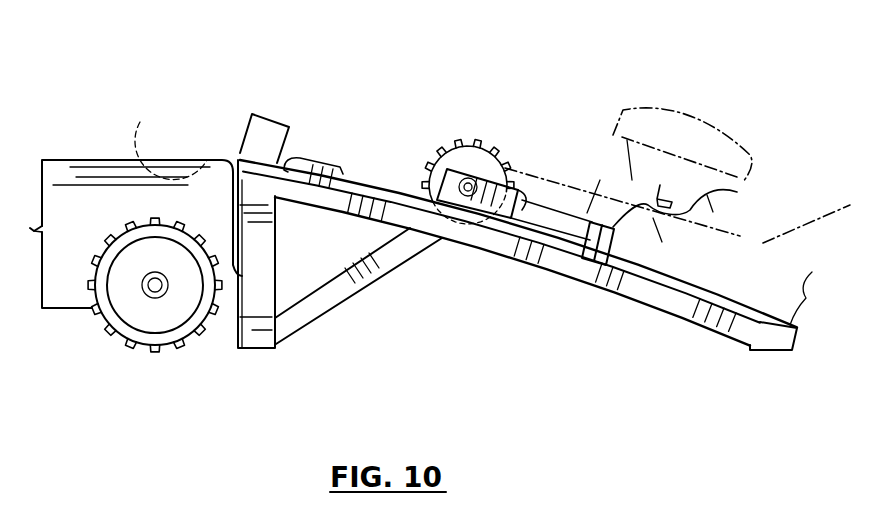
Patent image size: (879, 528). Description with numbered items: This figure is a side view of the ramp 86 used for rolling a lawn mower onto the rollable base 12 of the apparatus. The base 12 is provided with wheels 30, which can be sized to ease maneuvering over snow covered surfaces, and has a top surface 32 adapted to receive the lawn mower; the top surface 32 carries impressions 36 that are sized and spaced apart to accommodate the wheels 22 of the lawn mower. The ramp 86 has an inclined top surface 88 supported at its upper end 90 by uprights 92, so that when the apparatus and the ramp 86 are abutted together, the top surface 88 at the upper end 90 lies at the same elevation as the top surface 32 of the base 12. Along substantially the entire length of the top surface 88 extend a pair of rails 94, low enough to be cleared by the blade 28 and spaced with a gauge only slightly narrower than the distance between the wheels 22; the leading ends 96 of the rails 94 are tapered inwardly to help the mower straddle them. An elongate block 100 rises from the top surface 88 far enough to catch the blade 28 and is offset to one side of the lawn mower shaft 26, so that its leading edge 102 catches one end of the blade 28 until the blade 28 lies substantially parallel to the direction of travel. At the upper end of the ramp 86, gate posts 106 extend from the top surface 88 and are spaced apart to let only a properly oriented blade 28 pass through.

The base 12 is at (68, 300).
The wheels of lawn mower 22 is at (508, 152).
The lawn mower shaft 26 is at (737, 192).
The lawn mower blade 28 is at (710, 237).
The wheels 30 is at (172, 335).
The top surface 32 is at (78, 160).
The impressions 36 is at (136, 135).
The ramp 86 is at (418, 108).
The inclined top surface 88 is at (356, 181).
The upper end 90 is at (243, 158).
The uprights 92 is at (268, 306).
The rails 94 is at (707, 297).
The leading ends 96 is at (768, 330).
The elongate block 100 is at (553, 196).
The leading edge 102 is at (662, 180).
The gate posts 106 is at (276, 130).